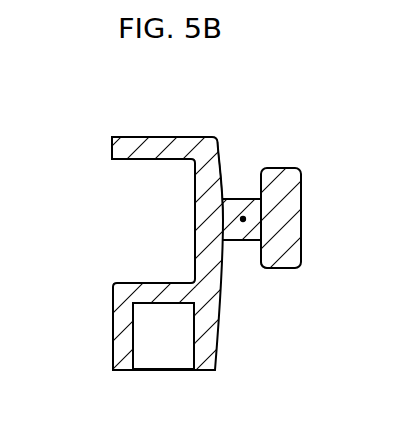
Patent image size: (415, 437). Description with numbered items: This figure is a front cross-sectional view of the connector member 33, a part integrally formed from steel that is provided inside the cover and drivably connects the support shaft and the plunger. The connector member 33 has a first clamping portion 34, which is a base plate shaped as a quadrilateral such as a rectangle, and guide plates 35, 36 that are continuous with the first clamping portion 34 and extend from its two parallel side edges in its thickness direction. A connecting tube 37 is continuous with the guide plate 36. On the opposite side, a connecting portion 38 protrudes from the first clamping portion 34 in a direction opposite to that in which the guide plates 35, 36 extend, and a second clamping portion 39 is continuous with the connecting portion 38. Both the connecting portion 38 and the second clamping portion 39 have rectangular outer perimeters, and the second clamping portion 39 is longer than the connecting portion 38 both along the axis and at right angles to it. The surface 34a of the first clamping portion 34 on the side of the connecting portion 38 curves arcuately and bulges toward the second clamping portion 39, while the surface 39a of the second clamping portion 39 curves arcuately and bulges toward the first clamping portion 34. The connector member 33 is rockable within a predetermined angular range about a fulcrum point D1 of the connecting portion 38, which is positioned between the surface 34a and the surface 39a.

The connector member 33 is at (104, 379).
The first clamping portion 34 is at (208, 264).
The surface of the first clamping portion 34a is at (222, 167).
The guide plate 35 is at (155, 145).
The guide plate 36 is at (157, 290).
The connecting tube 37 is at (120, 331).
The connecting portion 38 is at (238, 233).
The second clamping portion 39 is at (290, 208).
The surface of the second clamping portion 39a is at (258, 248).
The fulcrum point D1 is at (243, 219).